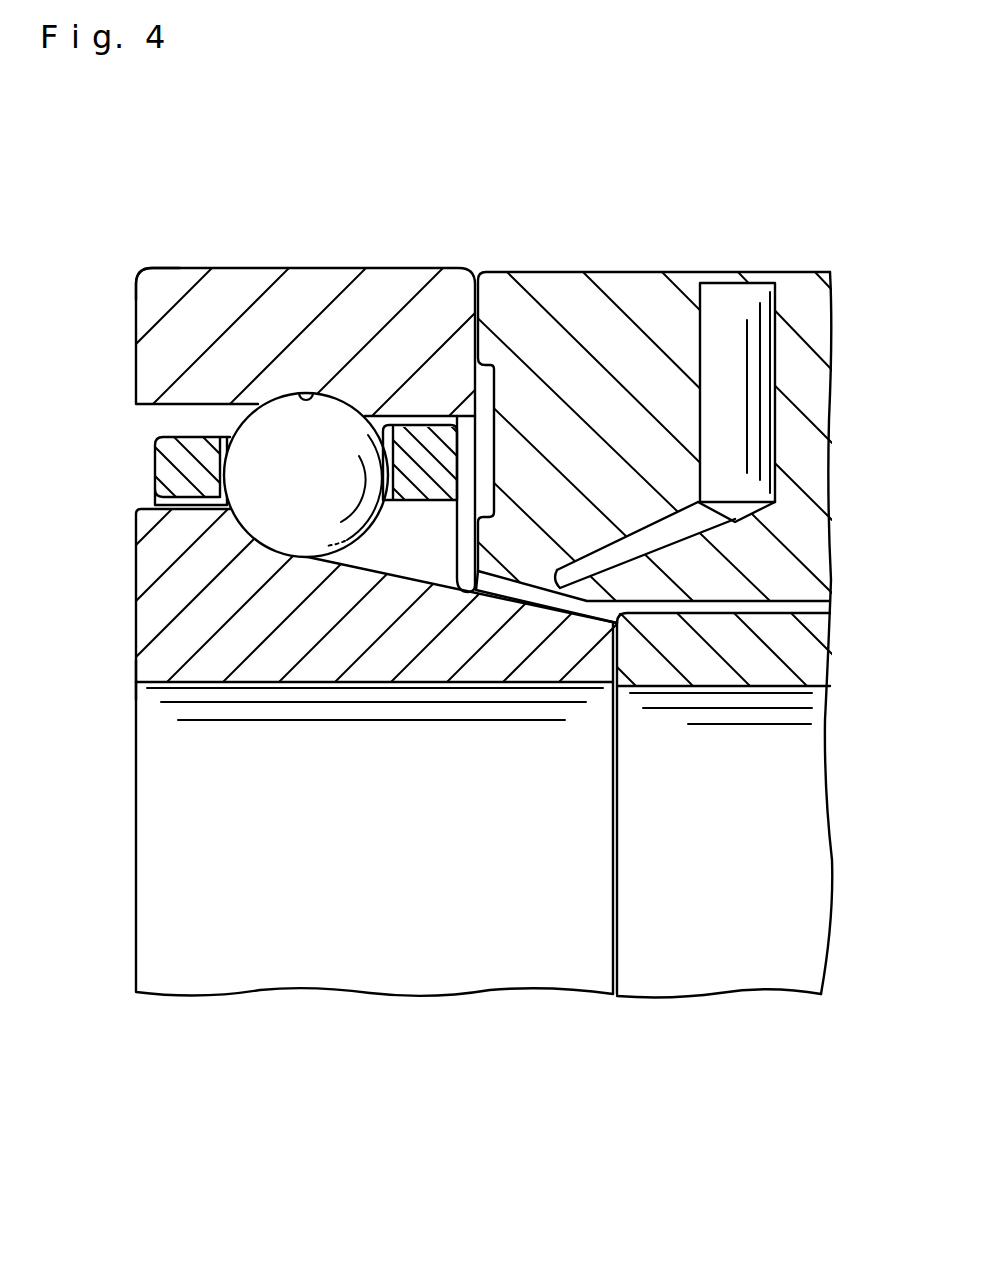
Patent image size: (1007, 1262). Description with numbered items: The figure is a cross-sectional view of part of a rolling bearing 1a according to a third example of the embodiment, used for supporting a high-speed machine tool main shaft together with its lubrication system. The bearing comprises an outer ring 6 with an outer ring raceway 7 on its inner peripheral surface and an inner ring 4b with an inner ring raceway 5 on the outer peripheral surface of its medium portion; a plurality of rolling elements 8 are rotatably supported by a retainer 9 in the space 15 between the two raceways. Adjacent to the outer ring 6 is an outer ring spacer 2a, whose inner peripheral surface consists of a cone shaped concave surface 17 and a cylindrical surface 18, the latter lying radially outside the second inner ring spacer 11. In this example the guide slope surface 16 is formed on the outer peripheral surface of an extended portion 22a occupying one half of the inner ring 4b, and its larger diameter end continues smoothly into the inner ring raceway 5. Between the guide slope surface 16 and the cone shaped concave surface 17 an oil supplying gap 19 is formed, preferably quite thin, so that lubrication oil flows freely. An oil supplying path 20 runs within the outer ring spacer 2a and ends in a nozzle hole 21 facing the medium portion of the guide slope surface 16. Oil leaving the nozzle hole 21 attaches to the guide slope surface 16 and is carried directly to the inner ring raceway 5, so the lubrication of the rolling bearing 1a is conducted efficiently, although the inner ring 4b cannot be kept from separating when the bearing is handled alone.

The rolling bearing 1a is at (157, 255).
The outer ring spacer 2a is at (642, 283).
The inner ring 4b is at (137, 677).
The inner ring raceway 5 is at (257, 540).
The outer ring 6 is at (237, 283).
The outer ring raceway 7 is at (310, 387).
The rolling elements 8 is at (265, 428).
The retainer 9 is at (160, 477).
The second inner ring spacer 11 is at (662, 675).
The space 15 is at (413, 507).
The guide slope surface 16 is at (557, 603).
The cone shaped concave surface 17 is at (453, 588).
The cylindrical surface 18 is at (790, 603).
The oil supplying gap 19 is at (548, 590).
The oil supplying path 20 is at (703, 322).
The nozzle hole 21 is at (622, 536).
The extended portion 22a is at (515, 648).